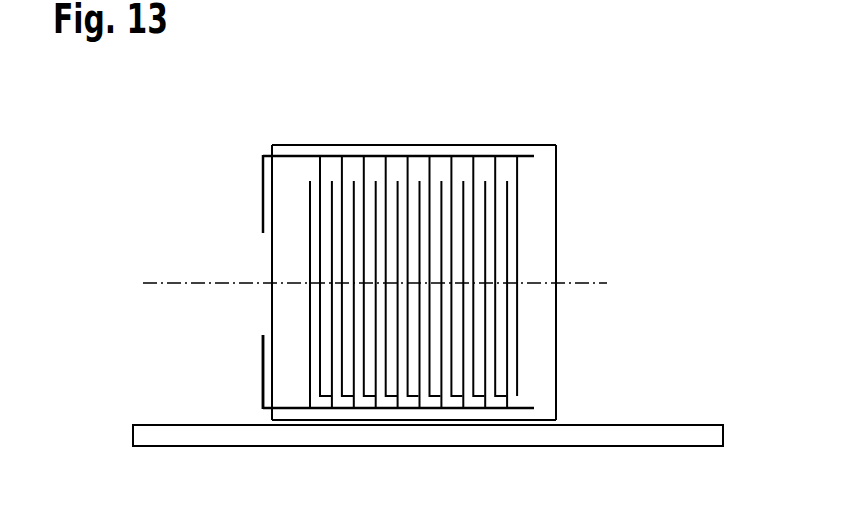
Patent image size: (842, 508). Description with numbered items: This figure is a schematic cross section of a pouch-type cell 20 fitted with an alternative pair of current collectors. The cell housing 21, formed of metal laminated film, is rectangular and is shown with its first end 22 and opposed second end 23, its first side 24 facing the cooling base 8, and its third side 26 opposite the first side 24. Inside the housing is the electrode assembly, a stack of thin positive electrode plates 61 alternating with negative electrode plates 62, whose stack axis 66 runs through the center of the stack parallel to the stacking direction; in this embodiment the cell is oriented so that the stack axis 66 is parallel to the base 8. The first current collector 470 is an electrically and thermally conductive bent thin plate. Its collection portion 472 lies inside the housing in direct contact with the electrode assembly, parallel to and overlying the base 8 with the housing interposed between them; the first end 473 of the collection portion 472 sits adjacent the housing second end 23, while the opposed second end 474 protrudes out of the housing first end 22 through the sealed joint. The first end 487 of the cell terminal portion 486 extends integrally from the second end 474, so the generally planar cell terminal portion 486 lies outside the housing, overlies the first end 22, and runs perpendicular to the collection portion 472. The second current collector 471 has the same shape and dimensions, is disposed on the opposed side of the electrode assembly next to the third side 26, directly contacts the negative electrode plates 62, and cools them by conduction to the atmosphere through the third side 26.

The base 8 is at (673, 437).
The cell 20 is at (420, 145).
The cell housing 21 is at (404, 283).
The first end 22 is at (271, 313).
The second end 23 is at (557, 325).
The first side 24 is at (537, 420).
The third side 26 is at (527, 145).
The positive electrode plates 61 is at (442, 397).
The negative electrode plates 62 is at (496, 170).
The stack axis 66 is at (153, 276).
The first current collector 470 is at (228, 397).
The second current collector 471 is at (242, 137).
The collection portion 472 is at (294, 156).
The first end of the collection portion 473 is at (528, 408).
The second end of the collection portion 474 is at (263, 409).
The cell terminal portion 486 is at (262, 192).
The first end of the cell terminal portion 487 is at (257, 404).